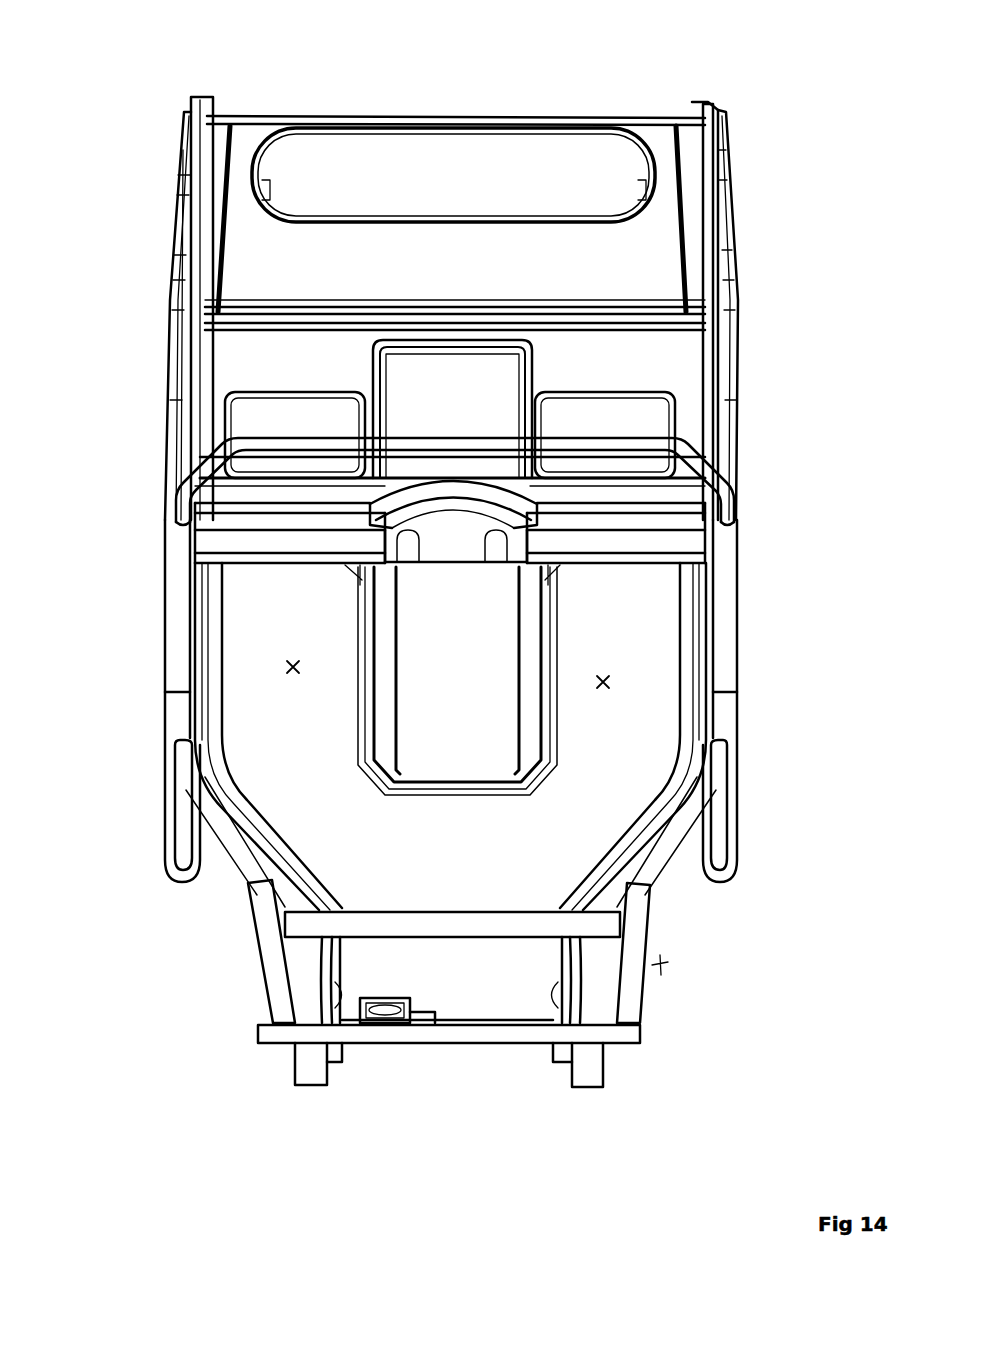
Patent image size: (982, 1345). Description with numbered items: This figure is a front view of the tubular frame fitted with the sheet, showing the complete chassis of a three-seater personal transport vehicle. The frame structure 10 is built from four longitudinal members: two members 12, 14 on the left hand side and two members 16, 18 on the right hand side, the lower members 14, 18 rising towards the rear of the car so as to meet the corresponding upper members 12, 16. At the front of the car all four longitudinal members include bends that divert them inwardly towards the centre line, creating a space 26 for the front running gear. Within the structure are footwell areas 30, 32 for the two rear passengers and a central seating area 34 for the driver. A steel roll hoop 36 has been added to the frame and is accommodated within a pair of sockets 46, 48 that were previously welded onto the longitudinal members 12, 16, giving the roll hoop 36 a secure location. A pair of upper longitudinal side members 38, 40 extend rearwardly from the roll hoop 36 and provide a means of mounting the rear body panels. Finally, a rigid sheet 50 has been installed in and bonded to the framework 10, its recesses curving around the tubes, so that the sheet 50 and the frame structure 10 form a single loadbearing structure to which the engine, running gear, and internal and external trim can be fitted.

The frame structure 10 is at (290, 1066).
The upper longitudinal member 12 is at (720, 622).
The lower longitudinal member 14 is at (540, 1074).
The upper longitudinal member 16 is at (167, 602).
The lower longitudinal member 18 is at (330, 1063).
The space for front running gear 26 is at (662, 968).
The footwell area 30 is at (610, 682).
The footwell area 32 is at (288, 668).
The seating area 34 is at (440, 665).
The roll hoop 36 is at (200, 470).
The upper longitudinal member 38 is at (716, 190).
The upper longitudinal member 40 is at (185, 172).
The socket 46 is at (715, 525).
The socket 48 is at (195, 532).
The rigid sheet 50 is at (340, 262).